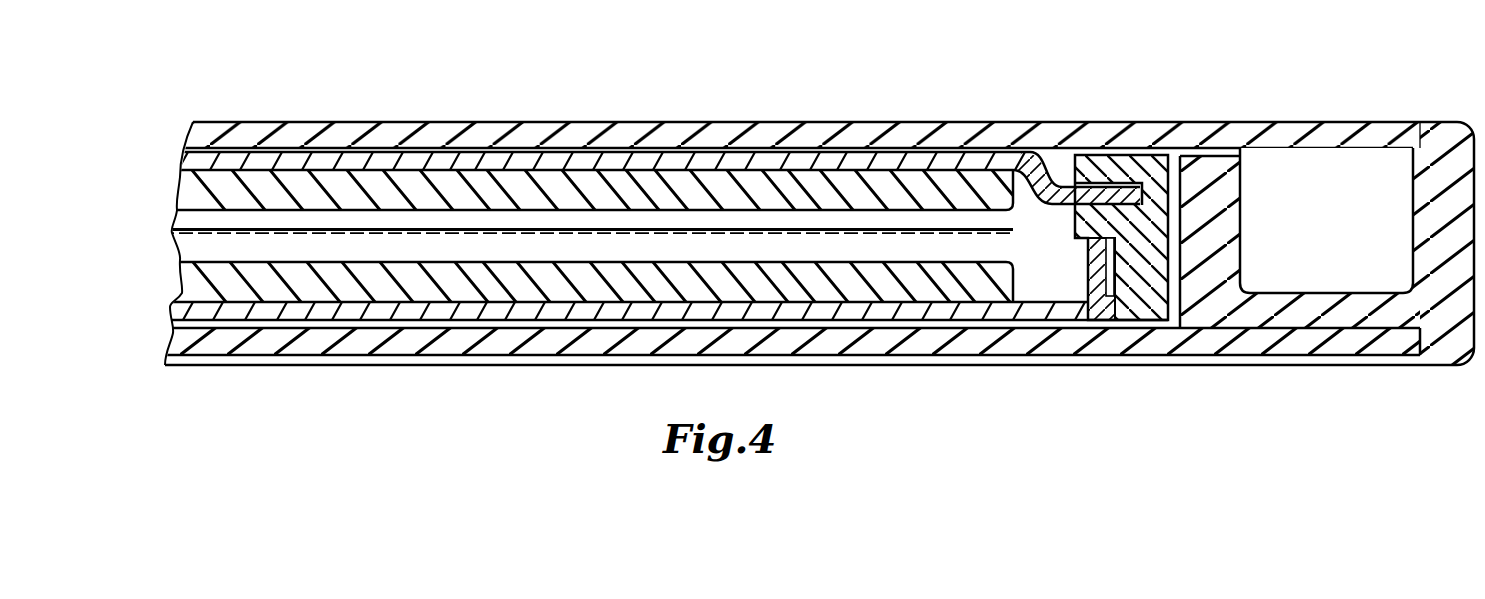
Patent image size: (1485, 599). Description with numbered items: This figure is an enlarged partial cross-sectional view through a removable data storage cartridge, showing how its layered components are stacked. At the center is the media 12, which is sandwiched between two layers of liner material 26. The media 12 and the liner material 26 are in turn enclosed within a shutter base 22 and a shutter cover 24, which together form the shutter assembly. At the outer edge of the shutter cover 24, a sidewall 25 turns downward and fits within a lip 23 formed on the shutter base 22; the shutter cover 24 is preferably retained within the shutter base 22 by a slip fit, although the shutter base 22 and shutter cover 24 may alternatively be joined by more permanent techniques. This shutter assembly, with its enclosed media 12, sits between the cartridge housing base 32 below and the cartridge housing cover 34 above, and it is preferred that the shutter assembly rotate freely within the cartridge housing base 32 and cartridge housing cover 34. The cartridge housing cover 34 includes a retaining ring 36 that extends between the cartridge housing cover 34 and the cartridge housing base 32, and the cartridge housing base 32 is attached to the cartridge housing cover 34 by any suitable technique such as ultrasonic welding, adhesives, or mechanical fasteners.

The media 12 is at (556, 229).
The shutter base 22 is at (420, 155).
The lip 23 is at (1108, 296).
The shutter cover 24 is at (950, 312).
The sidewall 25 is at (1093, 270).
The liner material 26 is at (650, 182).
The cartridge housing base 32 is at (488, 348).
The cartridge housing cover 34 is at (923, 140).
The retaining ring 36 is at (1216, 172).